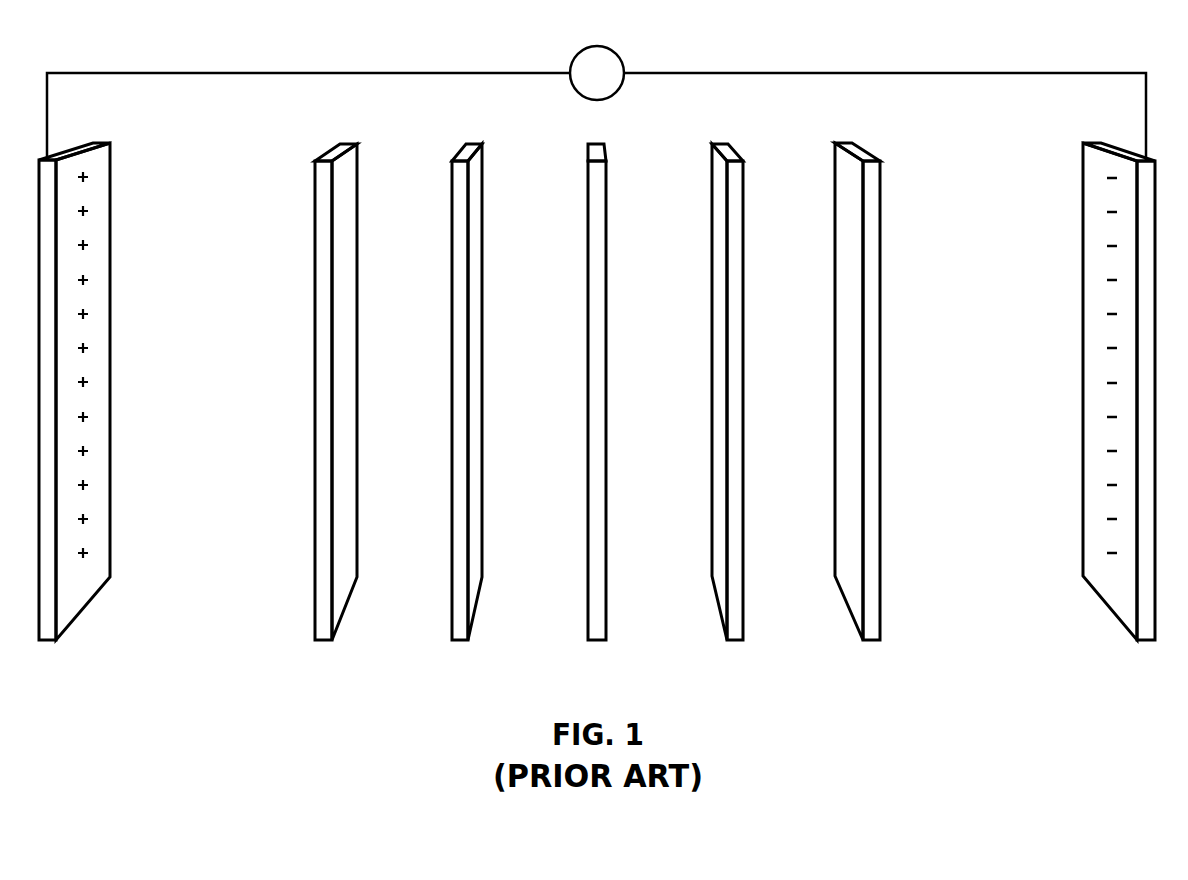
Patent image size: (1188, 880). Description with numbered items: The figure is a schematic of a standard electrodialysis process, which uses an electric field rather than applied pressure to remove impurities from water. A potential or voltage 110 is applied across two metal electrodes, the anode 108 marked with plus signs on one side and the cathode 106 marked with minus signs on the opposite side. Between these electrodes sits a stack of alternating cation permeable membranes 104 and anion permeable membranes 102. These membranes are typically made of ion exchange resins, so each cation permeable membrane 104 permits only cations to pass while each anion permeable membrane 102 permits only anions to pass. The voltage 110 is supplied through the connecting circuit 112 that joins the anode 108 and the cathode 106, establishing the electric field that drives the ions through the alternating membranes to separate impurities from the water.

The anion permeable membrane 102 is at (323, 216).
The cation permeable membrane 104 is at (460, 217).
The cathode 106 is at (1095, 346).
The anode 108 is at (95, 357).
The voltage 110 is at (597, 47).
The circuit wiring 112 is at (862, 73).